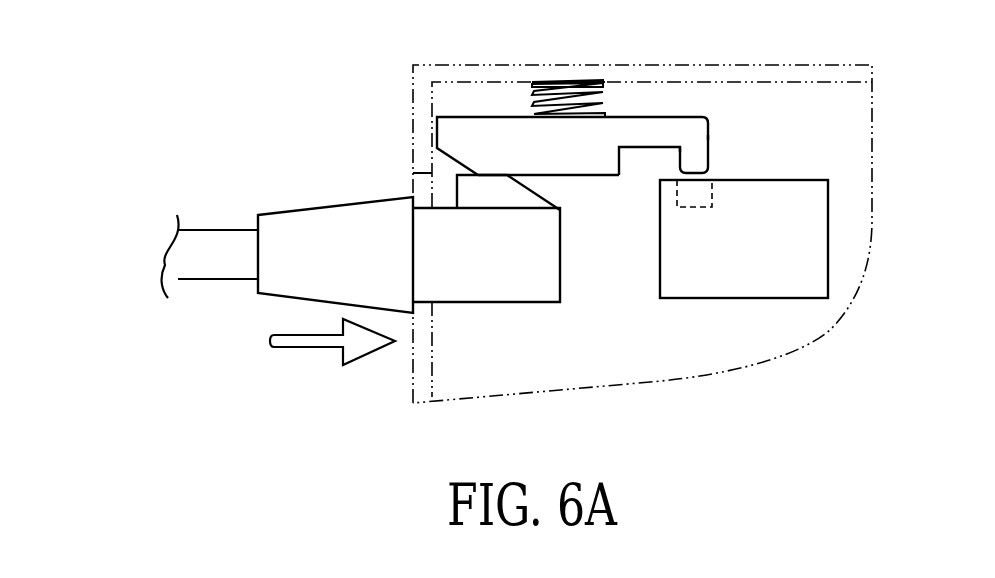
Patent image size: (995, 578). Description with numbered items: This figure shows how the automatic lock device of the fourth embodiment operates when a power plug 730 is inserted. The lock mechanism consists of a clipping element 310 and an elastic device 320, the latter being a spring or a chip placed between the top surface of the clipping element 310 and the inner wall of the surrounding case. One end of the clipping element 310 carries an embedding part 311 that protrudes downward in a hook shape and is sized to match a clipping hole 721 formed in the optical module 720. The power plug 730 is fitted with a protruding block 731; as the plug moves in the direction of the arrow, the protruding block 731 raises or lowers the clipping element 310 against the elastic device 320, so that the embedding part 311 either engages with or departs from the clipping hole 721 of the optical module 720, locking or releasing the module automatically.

The clipping element 310 is at (680, 116).
The embedding part 311 is at (700, 157).
The elastic device 320 is at (582, 88).
The optical module 720 is at (698, 284).
The clipping hole 721 is at (683, 207).
The power plug 730 is at (334, 200).
The protruding block 731 is at (478, 183).